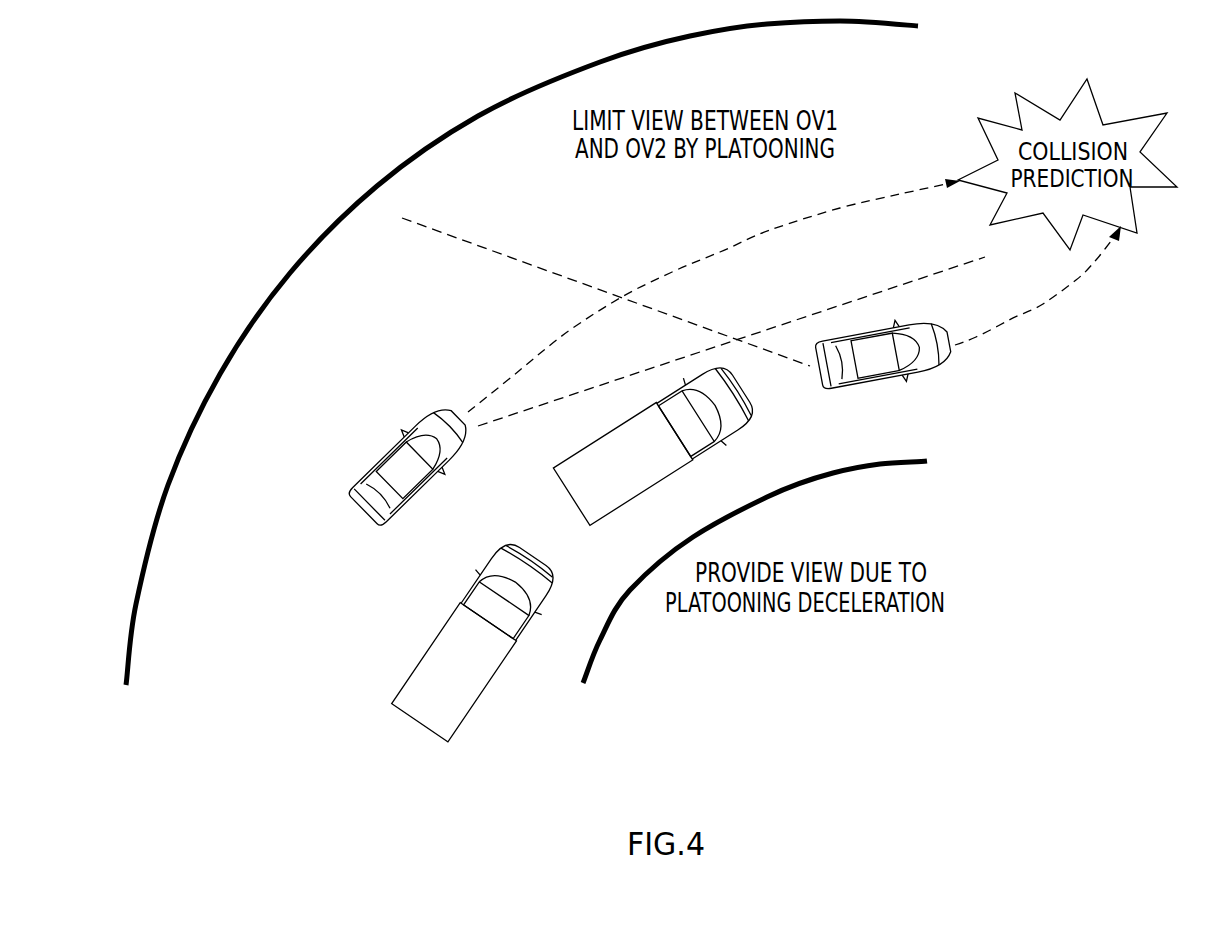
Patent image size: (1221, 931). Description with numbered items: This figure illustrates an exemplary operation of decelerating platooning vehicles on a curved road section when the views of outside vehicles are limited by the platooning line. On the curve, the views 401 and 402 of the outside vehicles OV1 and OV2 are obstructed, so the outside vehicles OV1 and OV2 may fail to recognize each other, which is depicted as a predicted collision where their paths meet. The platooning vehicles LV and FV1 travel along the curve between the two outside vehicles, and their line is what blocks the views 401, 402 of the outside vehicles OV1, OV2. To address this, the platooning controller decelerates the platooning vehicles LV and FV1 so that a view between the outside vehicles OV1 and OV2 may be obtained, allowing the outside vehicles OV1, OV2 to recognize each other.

The view 401 is at (877, 292).
The view 402 is at (516, 261).
The outside vehicle OV1 is at (411, 464).
The outside vehicle OV2 is at (883, 353).
The platooning vehicle LV is at (656, 442).
The platooning vehicle FV1 is at (476, 639).